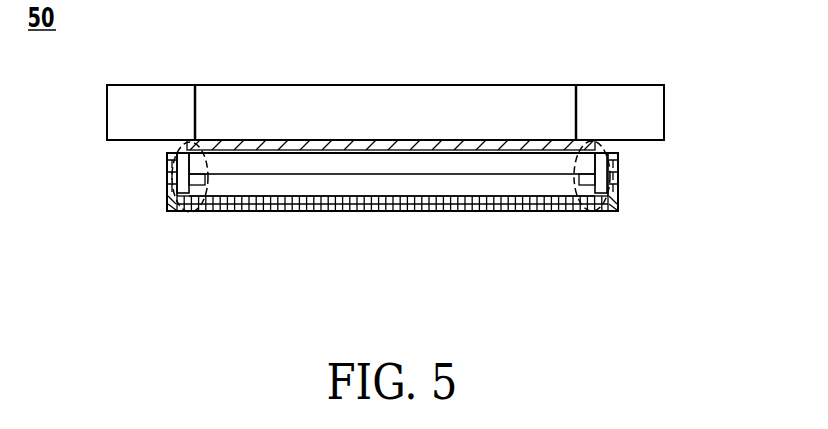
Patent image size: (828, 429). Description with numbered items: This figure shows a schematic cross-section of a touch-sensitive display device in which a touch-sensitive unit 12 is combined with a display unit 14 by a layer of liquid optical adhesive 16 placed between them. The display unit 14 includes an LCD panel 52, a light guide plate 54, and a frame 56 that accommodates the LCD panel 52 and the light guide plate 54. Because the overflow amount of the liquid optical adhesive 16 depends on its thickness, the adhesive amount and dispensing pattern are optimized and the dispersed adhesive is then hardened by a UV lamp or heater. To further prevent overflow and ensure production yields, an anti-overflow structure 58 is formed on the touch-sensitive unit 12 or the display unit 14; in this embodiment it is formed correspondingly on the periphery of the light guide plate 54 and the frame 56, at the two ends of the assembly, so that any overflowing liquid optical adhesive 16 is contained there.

The touch-sensitive unit 12 is at (95, 85).
The display unit 14 is at (133, 153).
The liquid optical adhesive 16 is at (597, 143).
The LCD panel 52 is at (297, 160).
The light guide plate 54 is at (367, 182).
The frame 56 is at (455, 205).
The anti-overflow structure 58 is at (193, 203).